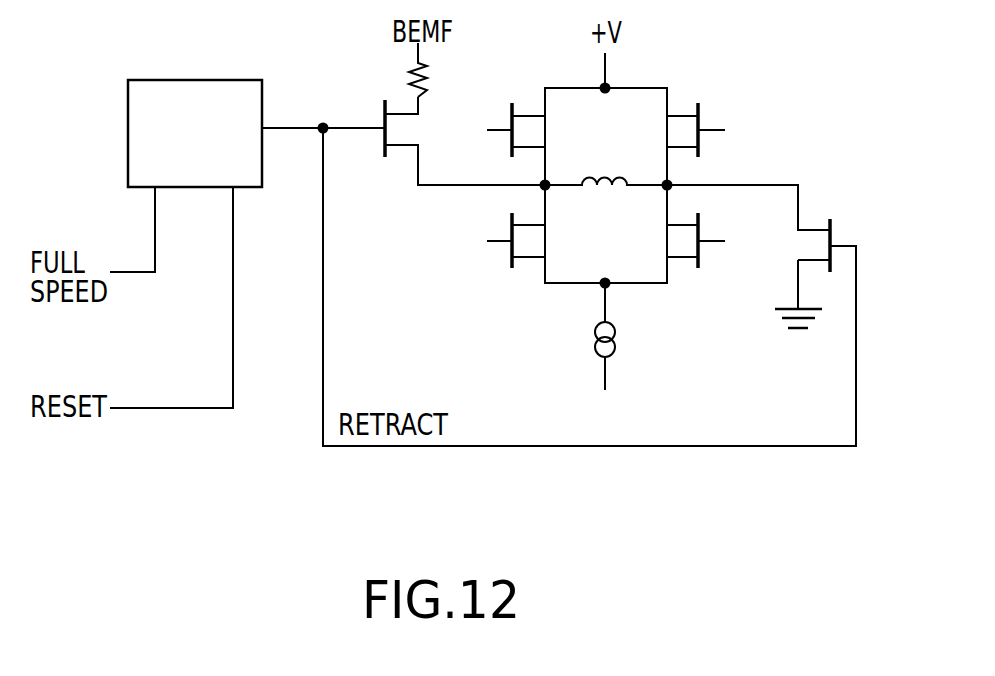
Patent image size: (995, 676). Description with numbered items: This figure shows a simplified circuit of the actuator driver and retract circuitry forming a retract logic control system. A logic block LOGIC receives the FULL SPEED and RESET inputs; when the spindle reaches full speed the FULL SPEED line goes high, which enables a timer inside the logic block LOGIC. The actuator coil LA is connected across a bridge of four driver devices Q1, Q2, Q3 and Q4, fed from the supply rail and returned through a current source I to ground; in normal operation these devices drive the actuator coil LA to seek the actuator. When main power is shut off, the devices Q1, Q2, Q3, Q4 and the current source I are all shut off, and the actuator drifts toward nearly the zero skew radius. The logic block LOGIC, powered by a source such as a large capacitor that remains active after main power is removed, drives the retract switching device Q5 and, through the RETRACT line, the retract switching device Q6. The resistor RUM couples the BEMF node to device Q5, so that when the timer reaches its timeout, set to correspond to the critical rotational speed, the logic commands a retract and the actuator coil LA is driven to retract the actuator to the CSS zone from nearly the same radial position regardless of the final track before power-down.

The logic block LOGIC is at (195, 133).
The actuator driver device Q1 is at (543, 130).
The actuator driver device Q2 is at (665, 130).
The actuator driver device Q3 is at (544, 240).
The actuator driver device Q4 is at (665, 240).
The retract switching device Q5 is at (465, 141).
The retract switching device Q6 is at (820, 268).
The resistor RUM is at (448, 71).
The actuator coil inductance LA is at (686, 183).
The current source I is at (638, 330).